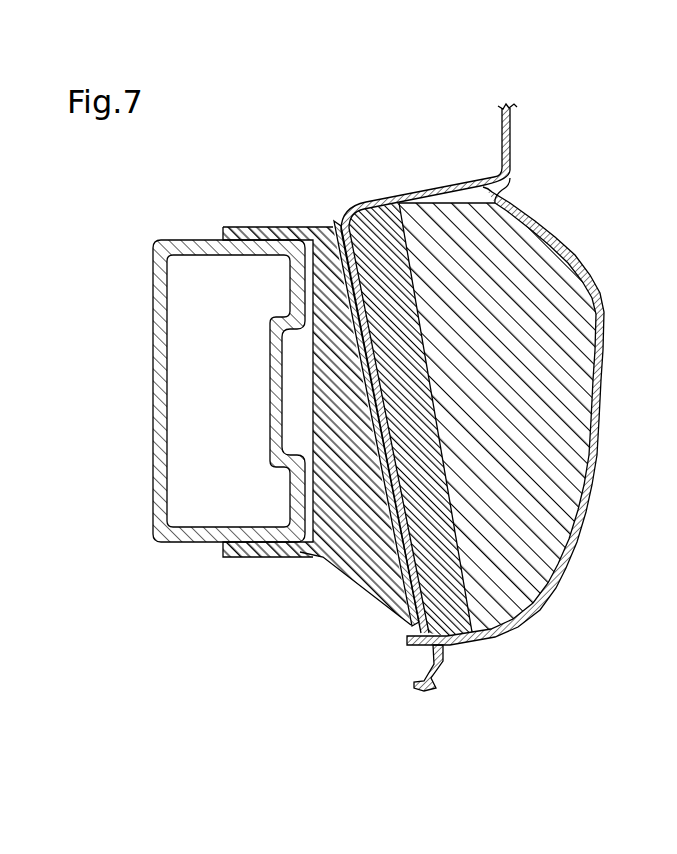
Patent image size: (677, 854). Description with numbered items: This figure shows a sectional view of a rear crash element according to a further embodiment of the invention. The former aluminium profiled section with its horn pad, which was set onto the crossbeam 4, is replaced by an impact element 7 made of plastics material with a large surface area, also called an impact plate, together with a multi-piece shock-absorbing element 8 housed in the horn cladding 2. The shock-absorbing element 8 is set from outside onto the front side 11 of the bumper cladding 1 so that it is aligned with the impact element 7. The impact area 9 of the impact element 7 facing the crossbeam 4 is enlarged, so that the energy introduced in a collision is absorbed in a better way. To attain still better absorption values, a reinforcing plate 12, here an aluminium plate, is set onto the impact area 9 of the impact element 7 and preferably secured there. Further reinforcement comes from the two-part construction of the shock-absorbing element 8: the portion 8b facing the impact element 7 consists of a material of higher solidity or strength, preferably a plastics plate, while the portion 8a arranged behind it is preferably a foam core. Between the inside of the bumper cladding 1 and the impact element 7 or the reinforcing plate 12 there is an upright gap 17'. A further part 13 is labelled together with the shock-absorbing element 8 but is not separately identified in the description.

The bumper cladding 1 is at (509, 138).
The horn cladding 2 is at (595, 453).
The crossbeam 4 is at (158, 381).
The impact element 7 is at (345, 470).
The shock-absorbing element 8 is at (487, 383).
The portion of the shock-absorbing element 8a is at (468, 277).
The portion of the shock-absorbing element 8b is at (408, 278).
The impact area 9 is at (367, 215).
The front side 11 is at (450, 653).
The reinforcing plate 12 is at (377, 543).
The reinforcing strip 13 is at (498, 423).
The upright gap 17' is at (355, 639).